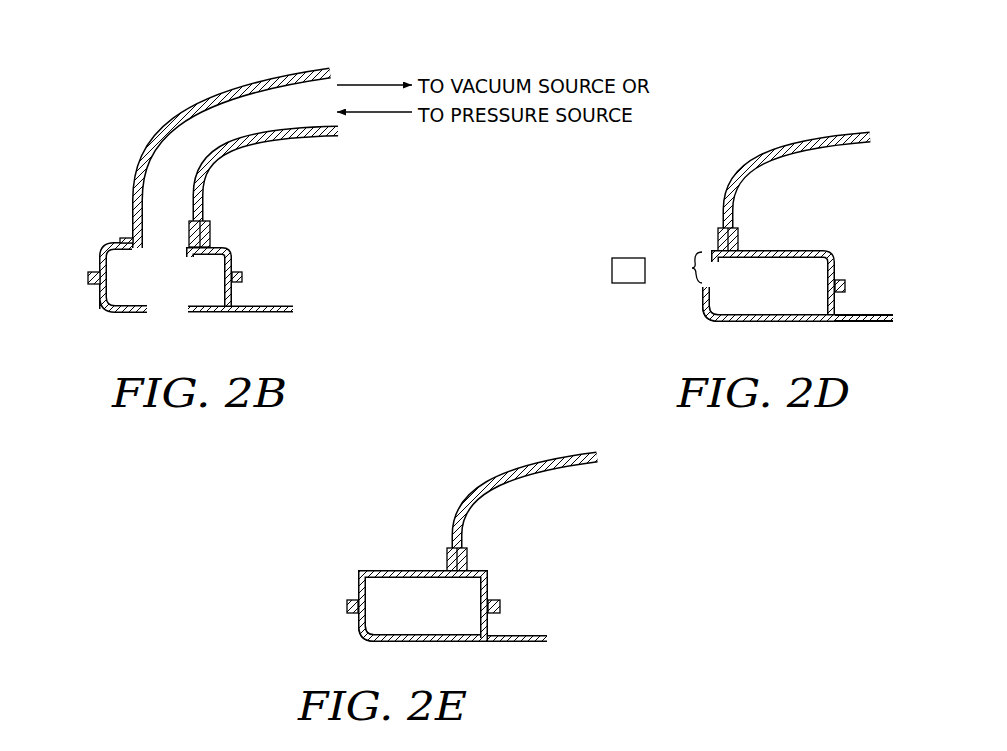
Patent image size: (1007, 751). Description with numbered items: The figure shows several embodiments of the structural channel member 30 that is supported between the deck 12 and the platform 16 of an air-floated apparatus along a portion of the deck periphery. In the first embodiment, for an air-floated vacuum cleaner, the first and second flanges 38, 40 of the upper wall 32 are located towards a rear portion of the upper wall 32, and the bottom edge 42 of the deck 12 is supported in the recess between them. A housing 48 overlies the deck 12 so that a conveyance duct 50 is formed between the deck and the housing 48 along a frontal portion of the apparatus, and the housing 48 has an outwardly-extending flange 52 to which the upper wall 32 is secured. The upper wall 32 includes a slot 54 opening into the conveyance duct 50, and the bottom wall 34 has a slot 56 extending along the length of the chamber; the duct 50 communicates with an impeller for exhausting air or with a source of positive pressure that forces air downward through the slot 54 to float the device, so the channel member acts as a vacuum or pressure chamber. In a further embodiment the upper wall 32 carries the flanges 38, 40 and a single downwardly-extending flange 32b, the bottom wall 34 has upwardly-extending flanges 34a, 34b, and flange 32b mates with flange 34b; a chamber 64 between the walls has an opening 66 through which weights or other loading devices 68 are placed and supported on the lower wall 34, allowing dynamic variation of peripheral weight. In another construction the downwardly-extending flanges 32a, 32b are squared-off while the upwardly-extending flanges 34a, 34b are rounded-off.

In FIG. 2B, the deck 12 is at (313, 143).
In FIG. 2D, the deck 12 is at (783, 158).
In FIG. 2E, the deck 12 is at (500, 480).
In FIG. 2B, the platform 16 is at (262, 313).
In FIG. 2D, the platform 16 is at (867, 323).
In FIG. 2E, the platform 16 is at (525, 645).
In FIG. 2D, the structural channel member 30 is at (707, 217).
In FIG. 2B, the upper wall 32 is at (131, 251).
In FIG. 2D, the upper wall 32 is at (807, 242).
In FIG. 2E, the upper wall 32 is at (403, 566).
In FIG. 2E, the downwardly-extending flange 32a is at (358, 592).
In FIG. 2D, the downwardly-extending flange 32b is at (834, 270).
In FIG. 2E, the downwardly-extending flange 32b is at (490, 590).
In FIG. 2B, the bottom wall 34 is at (130, 313).
In FIG. 2D, the bottom wall 34 is at (769, 309).
In FIG. 2E, the bottom wall 34 is at (424, 628).
In FIG. 2D, the upwardly-extending flange 34a is at (702, 295).
In FIG. 2E, the upwardly-extending flange 34a is at (358, 620).
In FIG. 2D, the upwardly-extending flange 34b is at (845, 290).
In FIG. 2E, the upwardly-extending flange 34b is at (498, 620).
In FIG. 2B, the first flange 38 is at (193, 229).
In FIG. 2D, the first flange 38 is at (713, 241).
In FIG. 2B, the second flange 40 is at (208, 227).
In FIG. 2D, the second flange 40 is at (737, 240).
In FIG. 2B, the bottom edge 42 is at (203, 253).
In FIG. 2B, the housing 48 is at (229, 89).
In FIG. 2B, the conveyance duct 50 is at (237, 150).
In FIG. 2B, the outwardly-extending flange 52 is at (128, 238).
In FIG. 2B, the slot 54 is at (180, 253).
In FIG. 2B, the slot 56 is at (180, 306).
In FIG. 2D, the chamber 64 is at (752, 305).
In FIG. 2D, the opening 66 is at (683, 267).
In FIG. 2D, the loading devices 68 is at (683, 281).